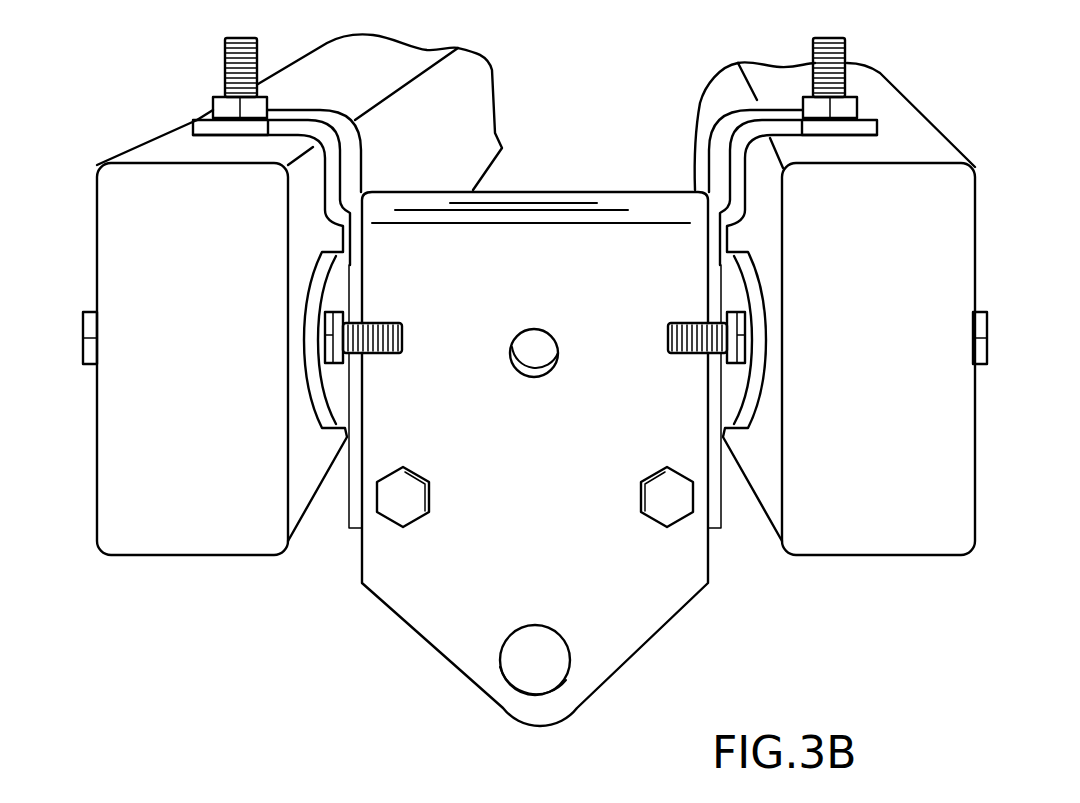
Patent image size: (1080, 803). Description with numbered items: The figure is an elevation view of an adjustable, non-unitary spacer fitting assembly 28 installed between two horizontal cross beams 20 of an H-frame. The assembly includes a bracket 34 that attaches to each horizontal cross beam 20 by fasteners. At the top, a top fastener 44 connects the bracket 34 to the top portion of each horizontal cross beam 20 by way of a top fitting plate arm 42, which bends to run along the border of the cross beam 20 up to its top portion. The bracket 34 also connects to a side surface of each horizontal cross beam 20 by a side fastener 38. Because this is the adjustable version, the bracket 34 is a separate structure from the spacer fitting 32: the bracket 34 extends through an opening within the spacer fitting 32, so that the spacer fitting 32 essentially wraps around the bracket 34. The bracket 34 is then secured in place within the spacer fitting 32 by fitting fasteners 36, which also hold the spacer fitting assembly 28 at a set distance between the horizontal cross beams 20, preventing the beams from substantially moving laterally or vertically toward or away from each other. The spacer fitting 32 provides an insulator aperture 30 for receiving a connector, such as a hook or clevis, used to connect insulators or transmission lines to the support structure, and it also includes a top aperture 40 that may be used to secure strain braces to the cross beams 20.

The horizontal cross beam 20 is at (125, 242).
The spacer fitting assembly 28 is at (735, 628).
The insulator aperture 30 is at (523, 665).
The spacer fitting 32 is at (553, 725).
The bracket 34 is at (353, 502).
The fitting fasteners 36 is at (408, 508).
The side fastener 38 is at (332, 357).
The top aperture 40 is at (540, 355).
The top fitting plate arm 42 is at (183, 122).
The top fastener 44 is at (213, 100).